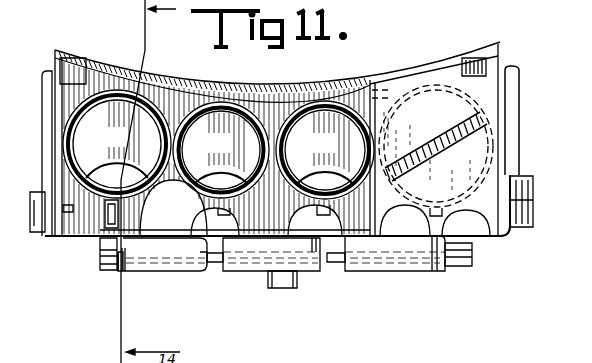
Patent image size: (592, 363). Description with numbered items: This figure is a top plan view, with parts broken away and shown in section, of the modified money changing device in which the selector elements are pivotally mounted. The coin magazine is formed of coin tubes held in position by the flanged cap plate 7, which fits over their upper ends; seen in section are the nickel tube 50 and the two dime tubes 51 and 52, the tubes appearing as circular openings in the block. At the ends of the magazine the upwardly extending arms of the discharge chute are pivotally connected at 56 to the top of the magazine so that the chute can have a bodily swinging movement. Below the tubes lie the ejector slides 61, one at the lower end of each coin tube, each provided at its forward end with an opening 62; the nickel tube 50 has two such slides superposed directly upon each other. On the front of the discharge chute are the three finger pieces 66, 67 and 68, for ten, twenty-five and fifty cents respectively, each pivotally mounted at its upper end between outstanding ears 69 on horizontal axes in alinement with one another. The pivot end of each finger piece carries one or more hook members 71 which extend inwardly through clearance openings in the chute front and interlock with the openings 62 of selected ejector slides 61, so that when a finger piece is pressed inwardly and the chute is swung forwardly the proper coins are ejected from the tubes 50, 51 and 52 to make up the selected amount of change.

The cap plate 7 is at (485, 89).
The nickel tube 50 is at (117, 144).
The dime tube 51 is at (221, 150).
The dime tube 52 is at (325, 150).
The pivotal connection 56 is at (534, 185).
The ejector slide 61 is at (148, 226).
The opening 62 is at (215, 262).
The finger piece 66 is at (160, 272).
The finger piece 67 is at (285, 289).
The finger piece 68 is at (372, 264).
The outstanding ears 69 is at (100, 266).
The hook member 71 is at (205, 230).